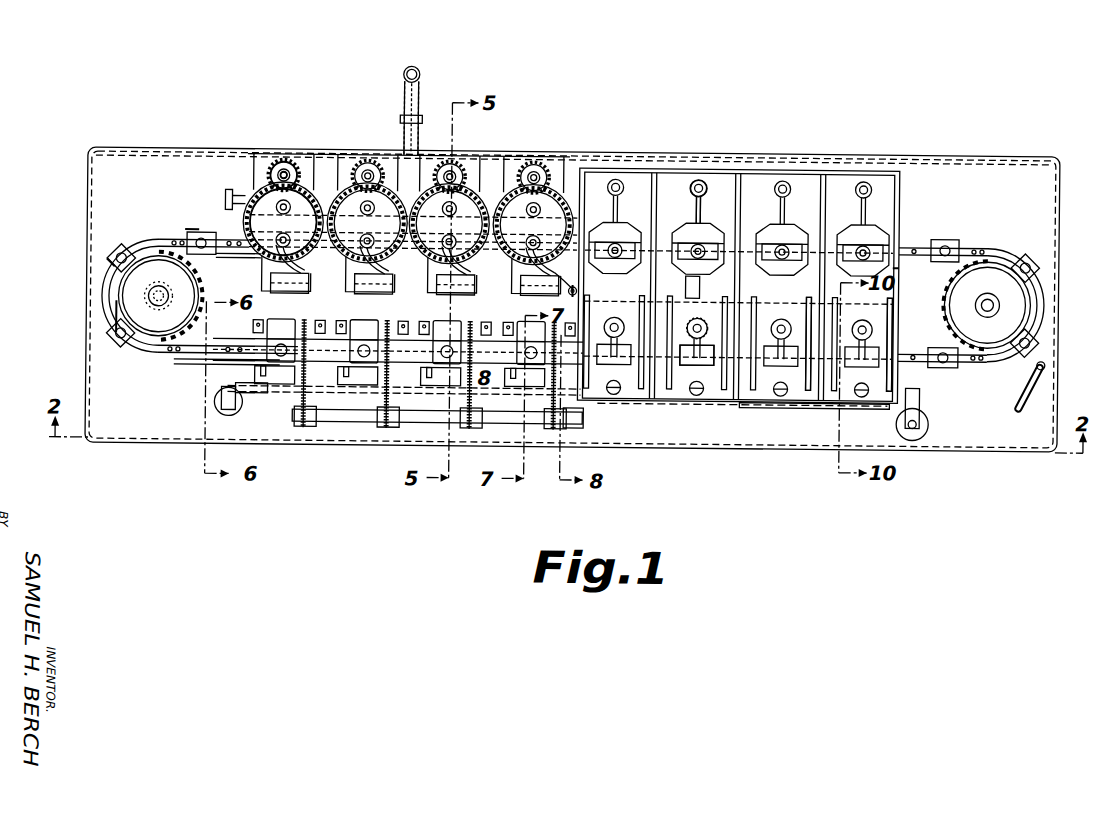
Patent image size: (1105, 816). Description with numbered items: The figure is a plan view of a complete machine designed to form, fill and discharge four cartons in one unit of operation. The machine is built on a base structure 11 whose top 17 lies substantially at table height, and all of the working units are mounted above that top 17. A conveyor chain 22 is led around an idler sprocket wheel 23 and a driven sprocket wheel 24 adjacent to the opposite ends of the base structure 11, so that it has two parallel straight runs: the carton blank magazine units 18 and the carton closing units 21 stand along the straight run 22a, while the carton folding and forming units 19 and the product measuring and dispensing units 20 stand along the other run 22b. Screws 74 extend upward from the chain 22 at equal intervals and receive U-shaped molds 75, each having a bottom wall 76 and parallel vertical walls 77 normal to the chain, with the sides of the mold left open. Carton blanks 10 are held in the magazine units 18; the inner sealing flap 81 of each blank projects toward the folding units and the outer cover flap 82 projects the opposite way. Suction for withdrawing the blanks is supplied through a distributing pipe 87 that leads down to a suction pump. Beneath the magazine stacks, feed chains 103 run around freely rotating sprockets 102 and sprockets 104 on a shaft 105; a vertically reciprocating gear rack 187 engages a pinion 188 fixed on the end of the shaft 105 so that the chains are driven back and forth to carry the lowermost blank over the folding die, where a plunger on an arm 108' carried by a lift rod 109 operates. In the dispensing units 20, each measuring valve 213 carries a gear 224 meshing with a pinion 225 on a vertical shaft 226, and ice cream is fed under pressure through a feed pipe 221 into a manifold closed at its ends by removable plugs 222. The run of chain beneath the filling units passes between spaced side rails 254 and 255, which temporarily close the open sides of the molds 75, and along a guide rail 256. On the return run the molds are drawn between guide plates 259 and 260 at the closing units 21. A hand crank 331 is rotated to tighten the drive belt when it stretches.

The base structure 11 is at (977, 143).
The top 17 is at (138, 159).
The carton blank magazine units 18 is at (786, 413).
The carton folding and forming units 19 is at (752, 274).
The product measuring and dispensing units 20 is at (389, 174).
The carton closing units 21 is at (280, 405).
The conveyor chain 22 is at (158, 352).
The straight run of conveyor chain 22a is at (922, 351).
The other parallel straight run of conveyor chain 22b is at (926, 241).
The idler sprocket wheel 23 is at (1017, 302).
The driven sprocket wheel 24 is at (130, 295).
The screws 74 is at (121, 345).
The molds or pockets 75 is at (108, 248).
The bottom wall 76 is at (110, 270).
The parallel vertical walls 77 is at (126, 240).
The inner sealing flap 81 is at (702, 284).
The outer cover flap 82 is at (707, 364).
The distributing pipe 87 is at (806, 403).
The sprockets 102 is at (905, 385).
The feed chains 103 is at (801, 300).
The sprockets 104 is at (900, 263).
The shaft 105 is at (900, 301).
The arm 108' is at (756, 173).
The lift rod 109 is at (700, 179).
The carton blanks 10 is at (729, 287).
The gear rack 187 is at (585, 286).
The pinion 188 is at (578, 287).
The measuring valve 213 is at (268, 198).
The feed pipe 221 is at (404, 137).
The removable plugs 222 is at (227, 197).
The gear 224 is at (305, 193).
The pinion 225 is at (278, 160).
The vertical shafts 226 is at (283, 170).
The side rail 254 is at (202, 232).
The side rail 255 is at (224, 262).
The guide rail 256 is at (237, 252).
The guide plate 259 is at (191, 329).
The guide plate 260 is at (217, 367).
The hand crank 331 is at (1031, 404).